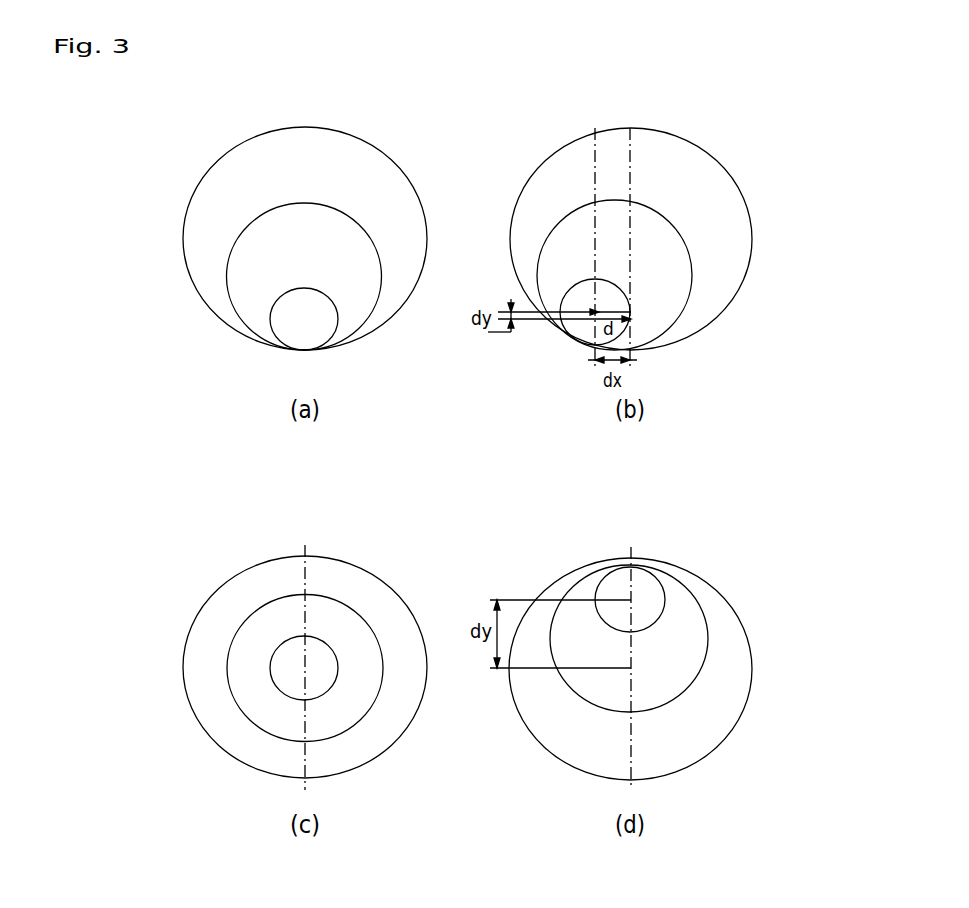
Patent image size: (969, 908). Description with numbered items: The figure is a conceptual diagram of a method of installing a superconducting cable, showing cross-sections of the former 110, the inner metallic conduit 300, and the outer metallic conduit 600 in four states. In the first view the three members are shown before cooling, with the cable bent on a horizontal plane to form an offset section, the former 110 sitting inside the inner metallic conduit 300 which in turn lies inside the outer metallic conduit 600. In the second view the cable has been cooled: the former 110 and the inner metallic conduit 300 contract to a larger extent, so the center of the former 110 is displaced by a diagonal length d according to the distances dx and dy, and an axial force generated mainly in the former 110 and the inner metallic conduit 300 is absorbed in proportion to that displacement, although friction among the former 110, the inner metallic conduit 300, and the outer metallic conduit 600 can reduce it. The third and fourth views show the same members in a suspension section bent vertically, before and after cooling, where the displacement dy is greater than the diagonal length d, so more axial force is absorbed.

The outer metallic conduit 600 is at (194, 192).
The inner metallic conduit 300 is at (229, 259).
The former 110 is at (296, 326).